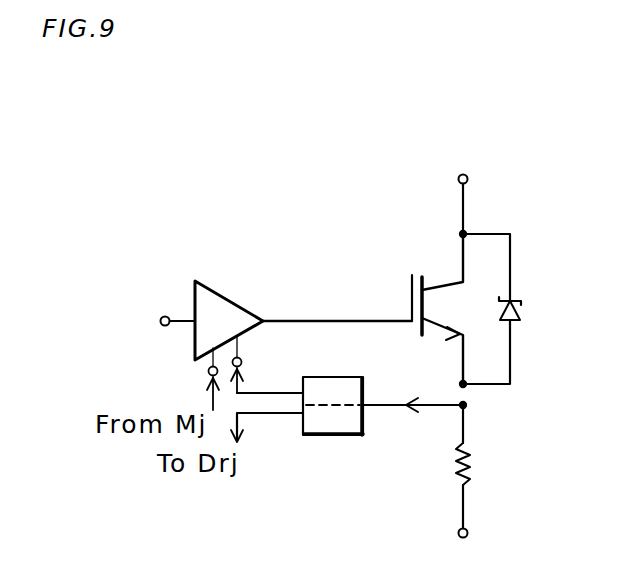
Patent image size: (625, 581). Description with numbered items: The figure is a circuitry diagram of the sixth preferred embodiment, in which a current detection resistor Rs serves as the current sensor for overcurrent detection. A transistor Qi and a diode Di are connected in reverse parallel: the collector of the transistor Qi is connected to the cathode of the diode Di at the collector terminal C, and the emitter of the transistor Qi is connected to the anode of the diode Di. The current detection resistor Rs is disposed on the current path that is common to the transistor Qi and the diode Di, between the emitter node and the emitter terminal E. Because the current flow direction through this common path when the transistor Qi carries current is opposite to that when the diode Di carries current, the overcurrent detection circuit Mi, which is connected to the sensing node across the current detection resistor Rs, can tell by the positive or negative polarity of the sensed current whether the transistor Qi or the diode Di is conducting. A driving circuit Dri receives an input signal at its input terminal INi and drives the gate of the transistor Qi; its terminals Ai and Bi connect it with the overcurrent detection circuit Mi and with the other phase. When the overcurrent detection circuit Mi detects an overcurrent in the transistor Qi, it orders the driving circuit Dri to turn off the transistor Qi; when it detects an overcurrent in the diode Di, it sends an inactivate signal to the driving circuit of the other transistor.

The input terminal INi is at (147, 321).
The driving circuit Dri is at (207, 300).
The driver input terminal A Ai is at (208, 370).
The driver output terminal B Bi is at (243, 361).
The overcurrent detection circuit Mi is at (335, 438).
The transistor Qi is at (411, 272).
The collector terminal C is at (463, 186).
The diode Di is at (515, 300).
The current detection resistor Rs is at (481, 466).
The emitter terminal E is at (476, 533).